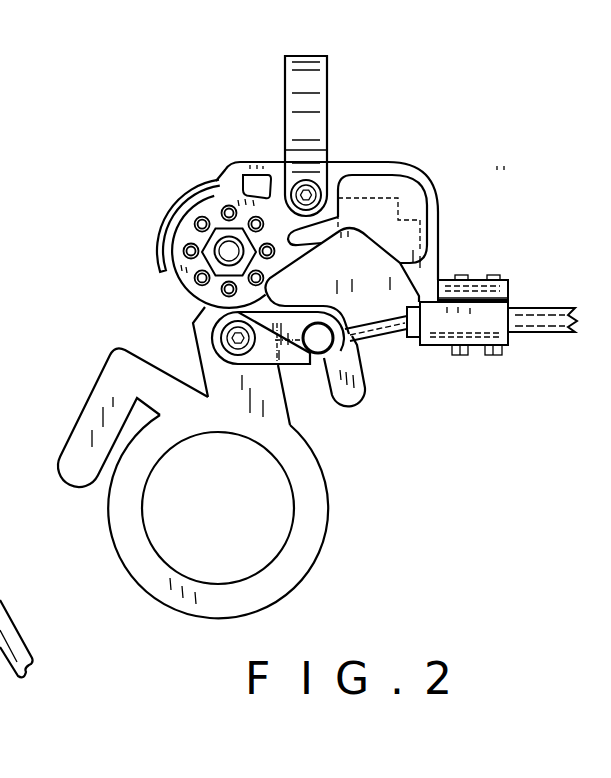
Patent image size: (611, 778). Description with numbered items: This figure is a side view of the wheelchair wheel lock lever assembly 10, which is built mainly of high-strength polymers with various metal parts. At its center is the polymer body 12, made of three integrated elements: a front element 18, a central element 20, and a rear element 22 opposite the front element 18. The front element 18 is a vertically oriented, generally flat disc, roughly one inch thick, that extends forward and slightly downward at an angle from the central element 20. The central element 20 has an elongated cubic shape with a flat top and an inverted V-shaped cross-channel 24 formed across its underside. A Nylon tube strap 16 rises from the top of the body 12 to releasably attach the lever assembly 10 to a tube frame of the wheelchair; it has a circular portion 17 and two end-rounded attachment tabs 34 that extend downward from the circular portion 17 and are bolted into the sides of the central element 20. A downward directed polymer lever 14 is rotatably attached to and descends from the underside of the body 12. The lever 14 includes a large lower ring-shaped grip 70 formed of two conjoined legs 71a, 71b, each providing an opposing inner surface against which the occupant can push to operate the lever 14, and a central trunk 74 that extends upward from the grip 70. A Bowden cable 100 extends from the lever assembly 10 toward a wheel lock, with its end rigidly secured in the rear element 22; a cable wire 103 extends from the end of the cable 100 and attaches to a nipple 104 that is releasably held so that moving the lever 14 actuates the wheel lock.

The wheelchair wheel lock lever assembly 10 is at (84, 196).
The polymer body 12 is at (410, 195).
The polymer lever 14 is at (74, 385).
The tube strap 16 is at (275, 72).
The circular portion 17 is at (310, 95).
The front element 18 is at (203, 212).
The central element 20 is at (368, 182).
The rear element 22 is at (490, 250).
The cross-channel 24 is at (356, 282).
The attachment tabs 34 is at (302, 162).
The grip 70 is at (168, 630).
The leg 71a is at (123, 542).
The leg 71b is at (318, 512).
The central trunk 74 is at (225, 377).
The Bowden cable 100 is at (529, 306).
The cable wire 103 is at (390, 334).
The nipple 104 is at (320, 355).